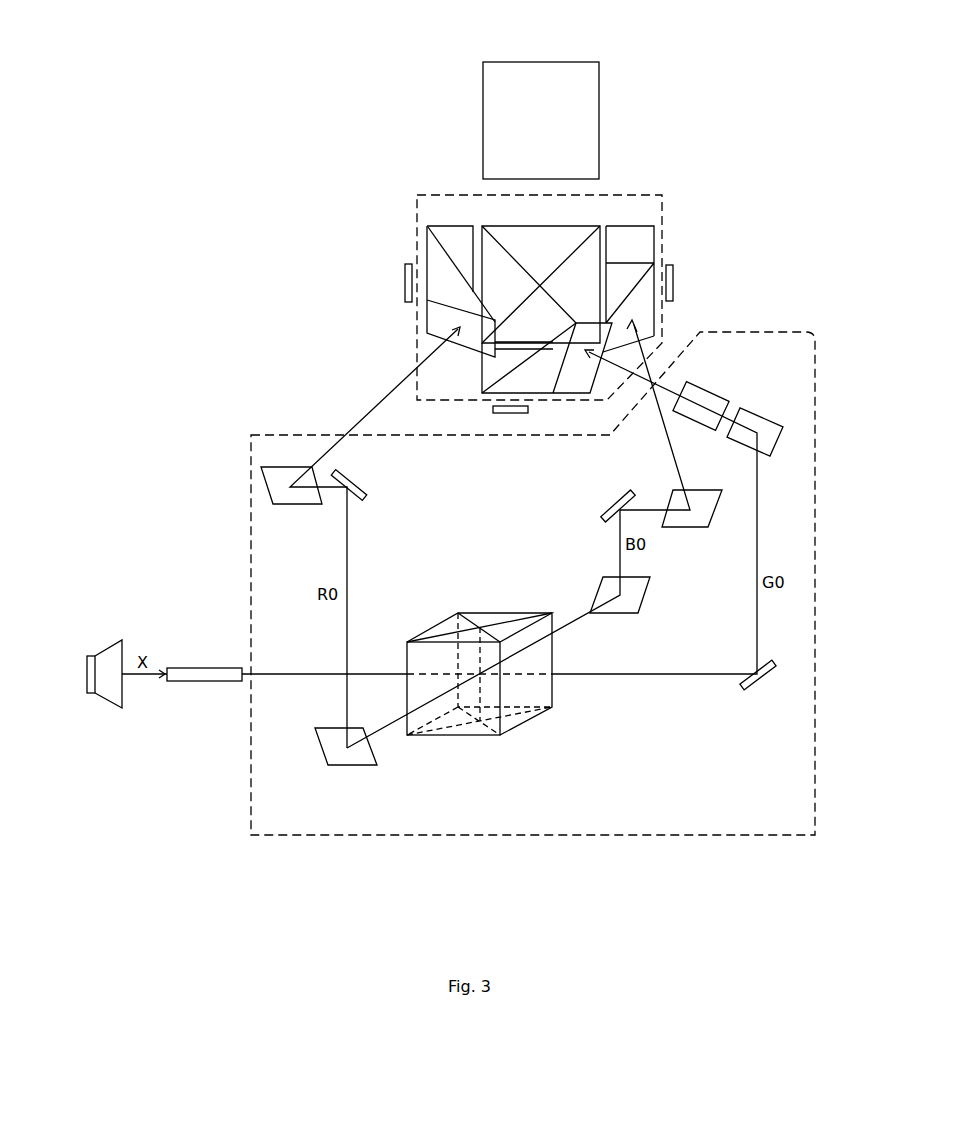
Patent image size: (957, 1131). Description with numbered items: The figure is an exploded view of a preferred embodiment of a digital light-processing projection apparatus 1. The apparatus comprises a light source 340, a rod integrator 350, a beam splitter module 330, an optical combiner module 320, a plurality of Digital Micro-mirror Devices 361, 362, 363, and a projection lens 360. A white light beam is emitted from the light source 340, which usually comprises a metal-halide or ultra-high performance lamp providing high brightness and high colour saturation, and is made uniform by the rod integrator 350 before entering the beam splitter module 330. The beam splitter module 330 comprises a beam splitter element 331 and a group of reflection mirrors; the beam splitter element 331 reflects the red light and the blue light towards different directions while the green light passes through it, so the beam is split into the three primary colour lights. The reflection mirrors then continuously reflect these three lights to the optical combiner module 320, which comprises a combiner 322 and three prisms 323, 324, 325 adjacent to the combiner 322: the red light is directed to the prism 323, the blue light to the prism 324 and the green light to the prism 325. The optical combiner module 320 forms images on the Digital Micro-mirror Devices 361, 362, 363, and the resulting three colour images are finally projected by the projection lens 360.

The digital light-processing projection apparatus 1 is at (384, 80).
The optical combiner module 320 is at (625, 195).
The combiner 322 is at (497, 226).
The prism 323 is at (440, 226).
The prism 324 is at (645, 226).
The prism 325 is at (482, 378).
The beam splitter module 330 is at (806, 332).
The beam splitter element 331 is at (530, 720).
The light source 340 is at (110, 643).
The rod integrator 350 is at (188, 668).
The projection lens 360 is at (600, 107).
The Digital Micro-mirror Device 361 is at (405, 282).
The Digital Micro-mirror Device 362 is at (673, 283).
The Digital Micro-mirror Device 363 is at (528, 413).